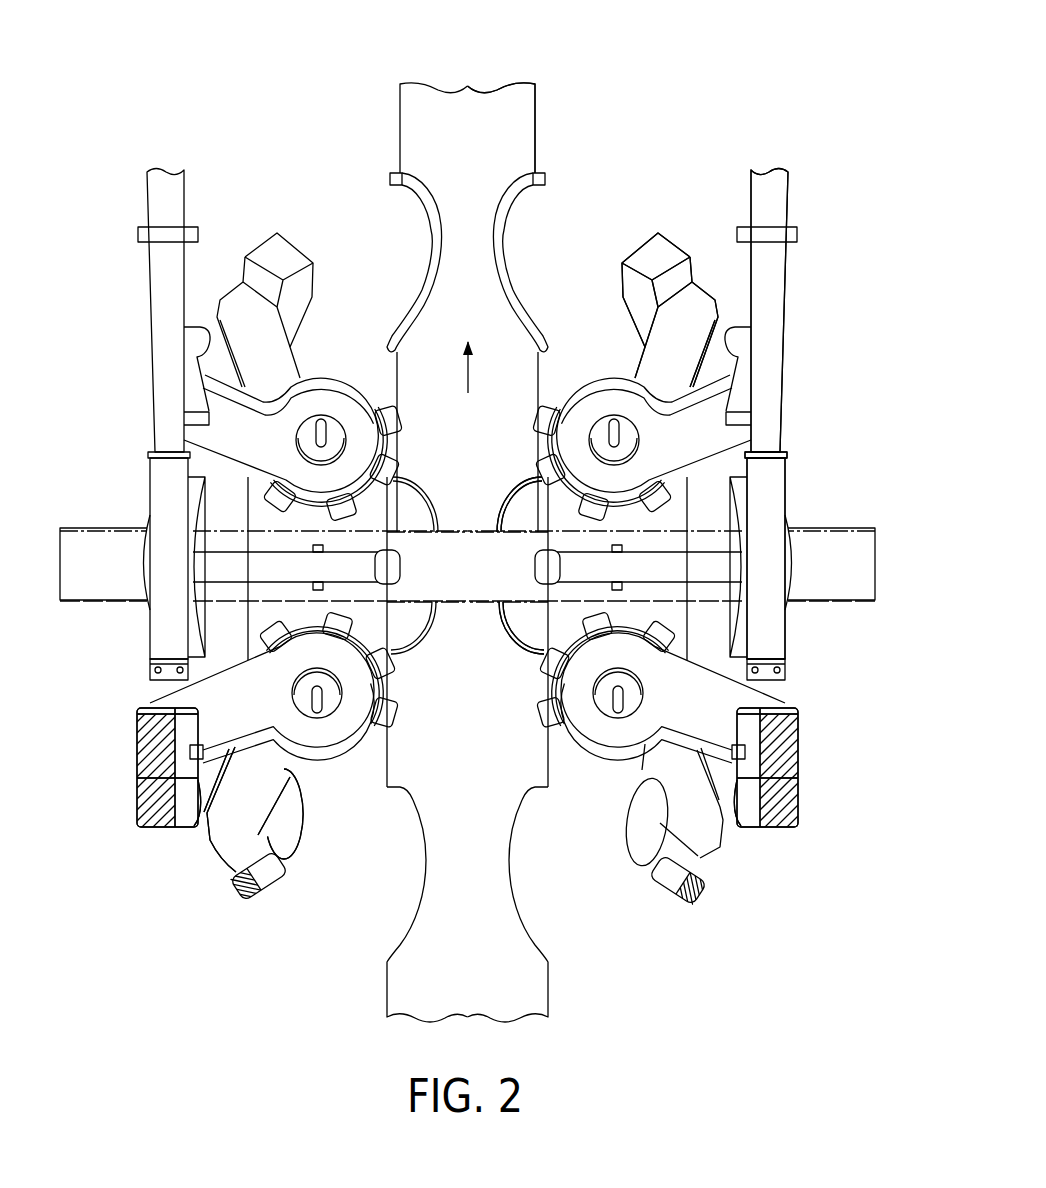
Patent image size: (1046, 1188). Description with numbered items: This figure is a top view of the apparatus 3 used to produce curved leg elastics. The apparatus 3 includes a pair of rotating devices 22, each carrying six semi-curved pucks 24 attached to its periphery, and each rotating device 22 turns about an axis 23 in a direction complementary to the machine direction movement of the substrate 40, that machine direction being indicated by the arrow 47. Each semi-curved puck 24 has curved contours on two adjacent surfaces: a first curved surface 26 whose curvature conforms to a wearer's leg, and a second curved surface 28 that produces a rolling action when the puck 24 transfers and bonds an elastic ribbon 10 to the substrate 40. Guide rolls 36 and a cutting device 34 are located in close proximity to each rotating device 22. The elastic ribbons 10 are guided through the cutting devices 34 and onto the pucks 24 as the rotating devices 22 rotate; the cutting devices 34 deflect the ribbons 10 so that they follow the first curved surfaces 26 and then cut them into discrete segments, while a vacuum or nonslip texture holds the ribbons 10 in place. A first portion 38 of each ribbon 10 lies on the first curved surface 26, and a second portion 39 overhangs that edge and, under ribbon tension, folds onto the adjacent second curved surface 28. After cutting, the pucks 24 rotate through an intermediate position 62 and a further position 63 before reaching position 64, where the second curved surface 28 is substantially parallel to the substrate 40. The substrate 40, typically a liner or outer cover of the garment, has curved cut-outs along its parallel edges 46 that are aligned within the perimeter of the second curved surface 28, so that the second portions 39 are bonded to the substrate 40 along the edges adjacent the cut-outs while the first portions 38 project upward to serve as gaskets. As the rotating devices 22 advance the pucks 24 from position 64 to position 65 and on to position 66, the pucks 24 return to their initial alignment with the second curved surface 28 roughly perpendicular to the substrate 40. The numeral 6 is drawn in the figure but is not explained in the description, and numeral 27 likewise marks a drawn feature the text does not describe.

The apparatus 3 is at (671, 118).
The housing block 6 is at (805, 588).
The elastic ribbon 10 is at (150, 308).
The rotating device 22 is at (533, 543).
The axis 23 is at (73, 540).
The semi-curved puck 24 is at (750, 830).
The first curved surface 26 is at (292, 865).
The friction lining 27 is at (231, 872).
The second curved surface 28 is at (138, 556).
The cutting device 34 is at (792, 672).
The guide roll 36 is at (798, 240).
The first portion 38 is at (797, 803).
The second portion 39 is at (796, 740).
The substrate 40 is at (533, 983).
The parallel edges 46 is at (540, 110).
The arrow 47 is at (470, 370).
The intermediate position 62 is at (810, 815).
The position 63 is at (676, 905).
The position 64 is at (516, 639).
The position 65 is at (623, 245).
The position 66 is at (795, 322).